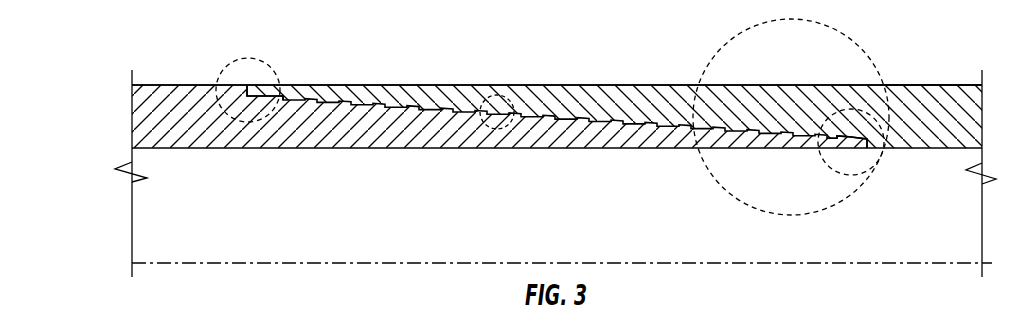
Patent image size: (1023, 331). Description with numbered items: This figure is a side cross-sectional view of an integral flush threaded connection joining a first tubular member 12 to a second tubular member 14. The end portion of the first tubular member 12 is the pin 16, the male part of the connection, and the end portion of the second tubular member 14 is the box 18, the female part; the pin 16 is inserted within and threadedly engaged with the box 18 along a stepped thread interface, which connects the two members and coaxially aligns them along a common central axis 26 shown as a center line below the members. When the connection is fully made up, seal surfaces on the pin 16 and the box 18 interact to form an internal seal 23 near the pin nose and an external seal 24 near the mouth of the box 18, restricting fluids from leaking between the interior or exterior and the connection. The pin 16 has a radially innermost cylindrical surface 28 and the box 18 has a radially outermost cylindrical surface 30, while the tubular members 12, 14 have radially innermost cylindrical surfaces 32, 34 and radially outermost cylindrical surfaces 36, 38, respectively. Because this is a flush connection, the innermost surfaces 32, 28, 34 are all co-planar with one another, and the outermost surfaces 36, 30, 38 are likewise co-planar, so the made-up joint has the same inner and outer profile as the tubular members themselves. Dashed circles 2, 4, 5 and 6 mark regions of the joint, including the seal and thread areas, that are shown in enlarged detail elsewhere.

The detail view circle 2 is at (870, 59).
The detail view circle 4 is at (490, 95).
The detail view circle 5 is at (856, 172).
The detail view circle 6 is at (251, 58).
The first tubular member 12 is at (157, 130).
The second tubular member 14 is at (925, 129).
The pin 16 is at (422, 142).
The box 18 is at (652, 114).
The internal seal 23 is at (838, 153).
The external seal 24 is at (283, 90).
The common central axis 26 is at (568, 262).
The radially innermost cylindrical surface of the pin 28 is at (453, 150).
The radially outermost cylindrical surface of the box 30 is at (659, 85).
The radially innermost cylindrical surface of the first tubular member 32 is at (179, 150).
The radially innermost cylindrical surface of the second tubular member 34 is at (942, 150).
The radially outermost cylindrical surface of the first tubular member 36 is at (183, 85).
The radially outermost cylindrical surface of the second tubular member 38 is at (943, 85).